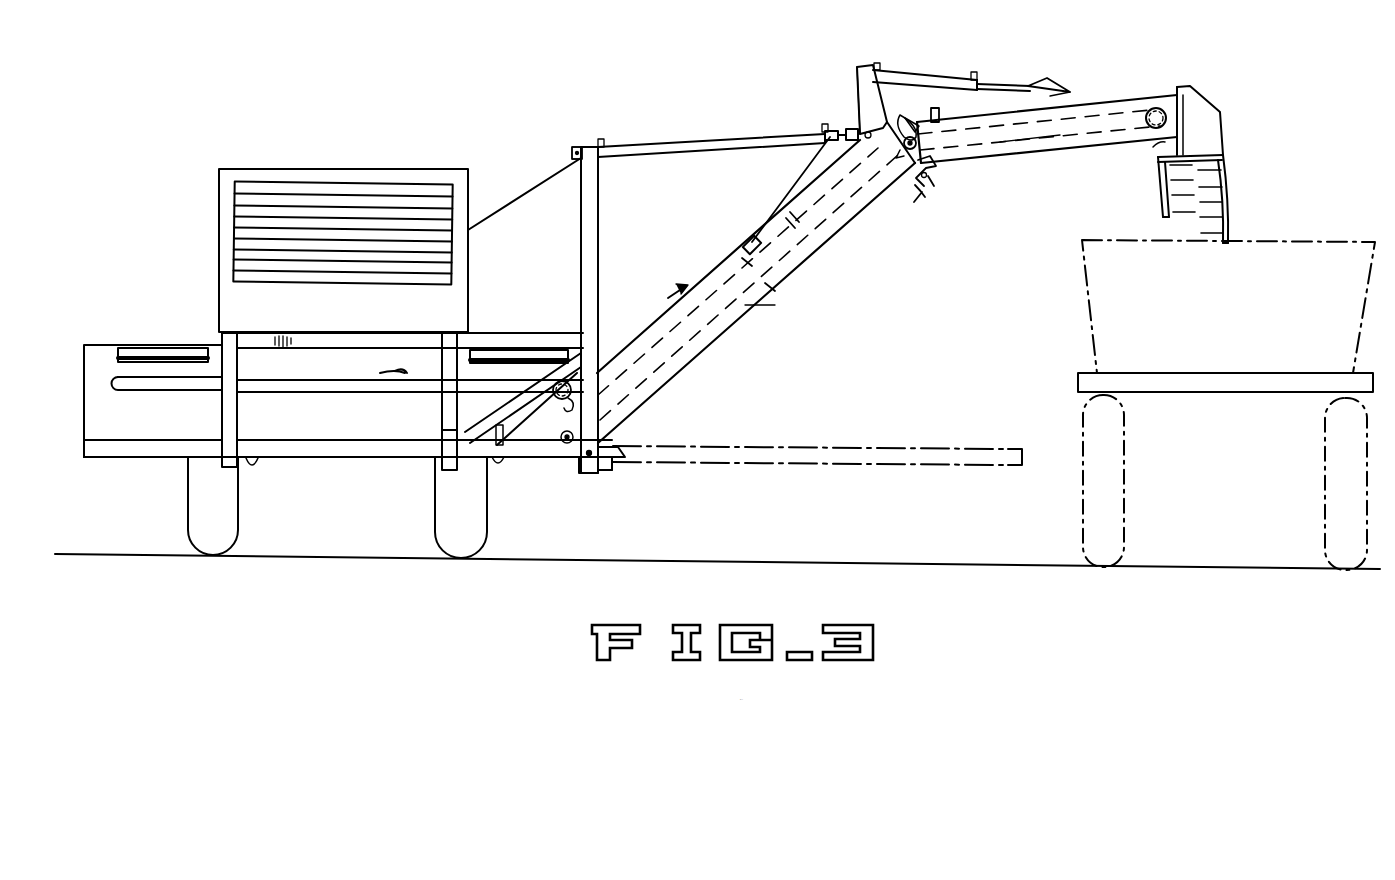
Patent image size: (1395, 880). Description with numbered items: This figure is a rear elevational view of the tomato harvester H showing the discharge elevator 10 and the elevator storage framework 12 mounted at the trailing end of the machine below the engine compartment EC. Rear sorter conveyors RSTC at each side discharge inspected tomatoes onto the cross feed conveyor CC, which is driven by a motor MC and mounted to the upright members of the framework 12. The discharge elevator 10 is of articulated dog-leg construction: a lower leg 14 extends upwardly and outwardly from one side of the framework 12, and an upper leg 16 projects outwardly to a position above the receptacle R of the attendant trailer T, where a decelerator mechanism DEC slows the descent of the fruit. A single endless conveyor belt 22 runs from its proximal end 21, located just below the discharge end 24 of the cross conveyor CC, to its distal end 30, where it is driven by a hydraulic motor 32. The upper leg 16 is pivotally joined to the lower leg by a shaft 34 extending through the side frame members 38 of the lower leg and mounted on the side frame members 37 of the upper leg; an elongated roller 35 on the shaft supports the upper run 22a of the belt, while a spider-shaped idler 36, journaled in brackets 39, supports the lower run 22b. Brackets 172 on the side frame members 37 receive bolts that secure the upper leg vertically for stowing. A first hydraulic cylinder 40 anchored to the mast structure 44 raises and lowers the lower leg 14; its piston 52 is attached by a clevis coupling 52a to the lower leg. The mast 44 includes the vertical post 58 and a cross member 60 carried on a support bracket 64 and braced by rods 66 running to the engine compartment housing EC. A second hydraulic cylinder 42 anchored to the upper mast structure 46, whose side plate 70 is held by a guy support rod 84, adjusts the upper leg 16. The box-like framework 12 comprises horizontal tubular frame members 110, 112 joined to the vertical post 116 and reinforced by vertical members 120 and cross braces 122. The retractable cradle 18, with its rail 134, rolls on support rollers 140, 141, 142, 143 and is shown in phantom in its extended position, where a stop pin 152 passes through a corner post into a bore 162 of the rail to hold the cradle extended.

The discharge elevator 10 is at (1094, 91).
The elevator storage framework 12 is at (218, 406).
The lower leg 14 is at (832, 252).
The upper leg 16 is at (1128, 96).
The cradle 18 is at (734, 438).
The proximal end 21 is at (564, 456).
The endless conveyor belt 22 is at (782, 212).
The upper run 22a is at (740, 256).
The lower run 22b is at (772, 288).
The discharge end 24 is at (566, 408).
The distal end 30 is at (1152, 148).
The hydraulic motor 32 is at (1167, 116).
The shaft 34 is at (903, 126).
The elongated roller 35 is at (862, 152).
The idler device 36 is at (934, 198).
The side frame members of upper leg 37 is at (1010, 146).
The side frame members of lower leg 38 is at (757, 312).
The brackets 39 is at (932, 180).
The first hydraulic cylinder 40 is at (690, 141).
The second hydraulic cylinder 42 is at (890, 68).
The mast structure 44 is at (602, 189).
The upper mast structure 46 is at (859, 63).
The piston element 52 is at (835, 130).
The clevis coupling 52a is at (843, 129).
The vertical structural post 58 is at (581, 223).
The cross member 60 is at (578, 147).
The support bracket 64 is at (572, 150).
The rods 66 is at (546, 172).
The side plate 70 is at (857, 72).
The guy support rod 84 is at (790, 183).
The tubular frame member 110 is at (374, 455).
The tubular frame member 112 is at (284, 333).
The vertical post 116 is at (222, 428).
The vertical members 120 is at (443, 408).
The cross braces 122 is at (443, 430).
The cradle rail 134 is at (622, 458).
The support rollers 140 is at (608, 472).
The upper support rollers 141 is at (503, 447).
The lower support rollers 142 is at (498, 459).
The lower support rollers 143 is at (253, 470).
The stop pin 152 is at (588, 474).
The bore 162 is at (185, 448).
The brackets 172 is at (939, 113).
The tomato harvester H is at (205, 176).
The engine compartment EC is at (228, 215).
The rear sorter conveyors RSTC is at (251, 345).
The cross feed conveyor CC is at (265, 380).
The motor MC is at (575, 369).
The decelerator mechanism DEC is at (1228, 185).
The receptacle R is at (1270, 240).
The attendant trailer T is at (1082, 401).